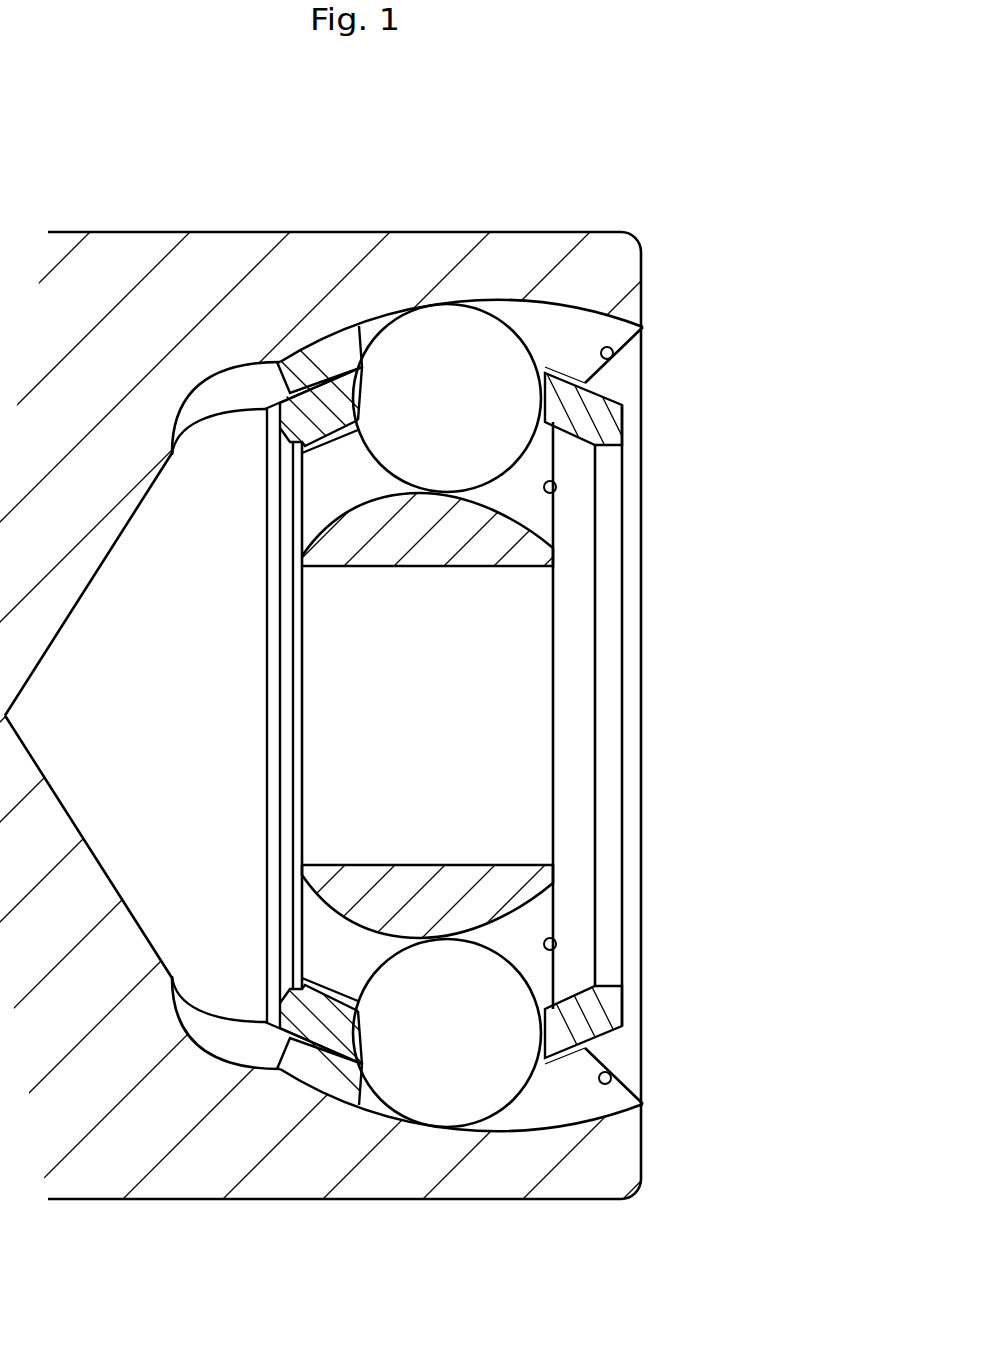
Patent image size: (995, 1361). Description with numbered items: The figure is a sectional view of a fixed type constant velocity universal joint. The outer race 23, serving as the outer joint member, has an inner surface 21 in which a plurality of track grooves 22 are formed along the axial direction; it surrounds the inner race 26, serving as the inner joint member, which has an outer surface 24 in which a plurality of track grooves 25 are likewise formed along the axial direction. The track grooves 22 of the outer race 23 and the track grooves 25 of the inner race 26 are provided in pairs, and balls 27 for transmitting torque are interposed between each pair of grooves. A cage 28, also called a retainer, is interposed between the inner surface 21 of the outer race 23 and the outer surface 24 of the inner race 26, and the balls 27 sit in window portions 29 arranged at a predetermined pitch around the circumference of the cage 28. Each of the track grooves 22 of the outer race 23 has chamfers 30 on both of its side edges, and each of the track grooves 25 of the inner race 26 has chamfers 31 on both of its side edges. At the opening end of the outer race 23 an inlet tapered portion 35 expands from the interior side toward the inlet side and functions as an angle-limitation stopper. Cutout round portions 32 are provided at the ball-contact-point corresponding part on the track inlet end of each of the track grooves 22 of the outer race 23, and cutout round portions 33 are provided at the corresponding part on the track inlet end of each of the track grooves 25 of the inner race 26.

The inner surface 21 is at (307, 392).
The track grooves 22 is at (567, 370).
The outer race 23 is at (512, 232).
The outer surface 24 is at (340, 1012).
The track grooves 25 is at (337, 488).
The inner race 26 is at (554, 871).
The balls 27 is at (462, 335).
The cage 28 is at (623, 1006).
The window portions 29 is at (363, 392).
The chamfers 30 is at (600, 320).
The chamfers 31 is at (327, 447).
The cutout round portions 32 is at (613, 356).
The cutout round portions 33 is at (556, 486).
The inlet tapered portion 35 is at (627, 342).